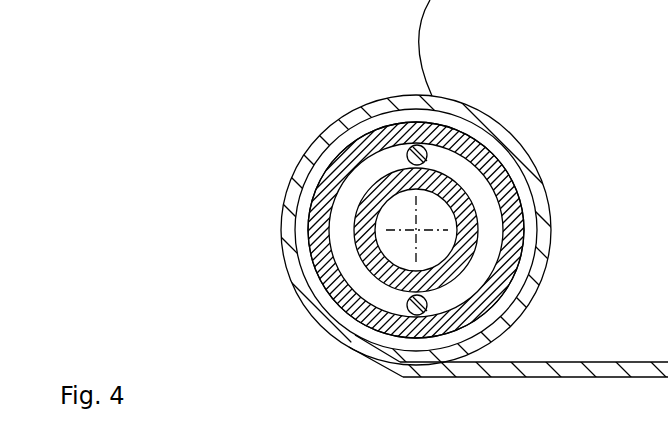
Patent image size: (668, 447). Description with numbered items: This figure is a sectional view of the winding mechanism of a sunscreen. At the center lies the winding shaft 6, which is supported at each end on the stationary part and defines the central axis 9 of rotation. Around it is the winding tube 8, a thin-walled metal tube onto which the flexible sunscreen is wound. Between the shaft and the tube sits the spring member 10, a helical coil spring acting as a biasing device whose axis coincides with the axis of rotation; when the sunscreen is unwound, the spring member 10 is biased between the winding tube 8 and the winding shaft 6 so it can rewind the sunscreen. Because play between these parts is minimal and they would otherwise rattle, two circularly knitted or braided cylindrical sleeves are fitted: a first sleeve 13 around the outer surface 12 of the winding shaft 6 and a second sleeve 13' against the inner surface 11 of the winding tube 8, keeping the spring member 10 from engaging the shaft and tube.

The winding shaft 6 is at (437, 248).
The winding tube 8 is at (528, 160).
The central axis 9 is at (413, 233).
The spring member 10 is at (428, 301).
The inner surface 11 is at (313, 198).
The outer surface 12 is at (448, 258).
The first sleeve 13 is at (375, 169).
The second sleeve 13' is at (446, 180).